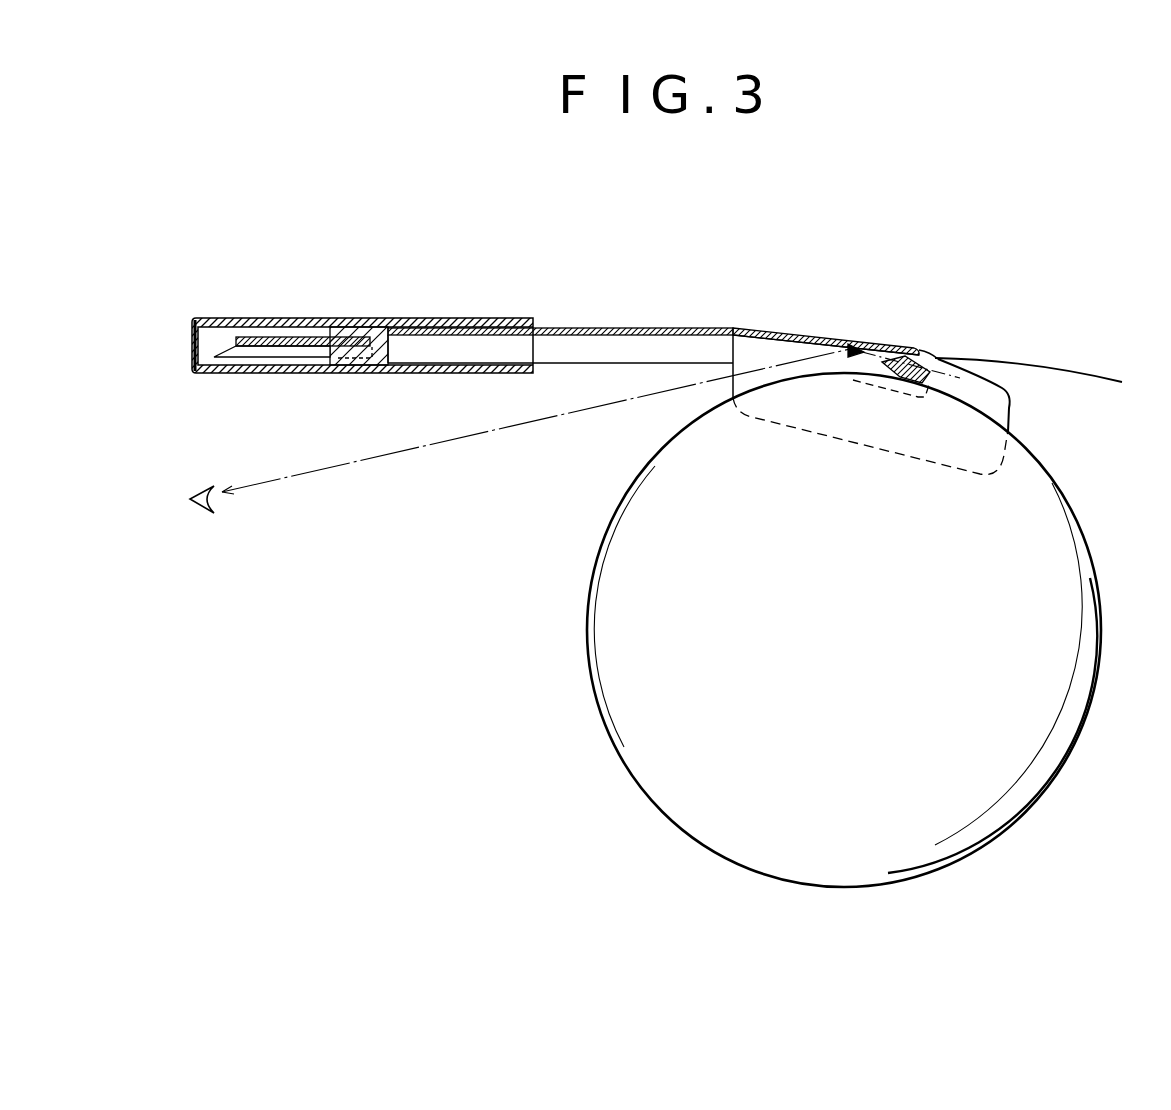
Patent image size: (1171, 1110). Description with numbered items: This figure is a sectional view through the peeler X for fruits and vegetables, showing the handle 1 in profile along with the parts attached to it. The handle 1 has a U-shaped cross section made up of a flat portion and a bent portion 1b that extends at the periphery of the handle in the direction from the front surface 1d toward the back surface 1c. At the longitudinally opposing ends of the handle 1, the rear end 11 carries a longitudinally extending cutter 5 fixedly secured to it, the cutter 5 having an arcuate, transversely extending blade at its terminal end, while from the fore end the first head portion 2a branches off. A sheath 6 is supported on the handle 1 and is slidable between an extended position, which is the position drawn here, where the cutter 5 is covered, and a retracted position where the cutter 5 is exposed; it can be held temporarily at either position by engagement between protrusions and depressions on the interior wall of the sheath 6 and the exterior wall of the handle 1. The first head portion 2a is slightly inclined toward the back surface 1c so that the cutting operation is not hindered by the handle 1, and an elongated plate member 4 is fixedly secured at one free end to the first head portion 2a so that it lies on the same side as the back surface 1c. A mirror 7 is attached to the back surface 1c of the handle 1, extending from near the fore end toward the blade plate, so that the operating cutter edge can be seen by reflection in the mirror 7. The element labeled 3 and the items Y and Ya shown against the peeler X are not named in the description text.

The handle 1 is at (653, 339).
The bent portion 1b is at (548, 367).
The back surface 1c is at (635, 338).
The front surface 1d is at (690, 321).
The first head portion 2a is at (925, 355).
The reflecting prism 3 is at (893, 356).
The plate member 4 is at (1012, 401).
The cutter 5 is at (255, 337).
The sheath 6 is at (295, 318).
The mirror 7 is at (805, 336).
The rear end 11 is at (327, 328).
The peeler X is at (581, 308).
The eyeball Y is at (1058, 717).
The eyelid Ya is at (1083, 358).